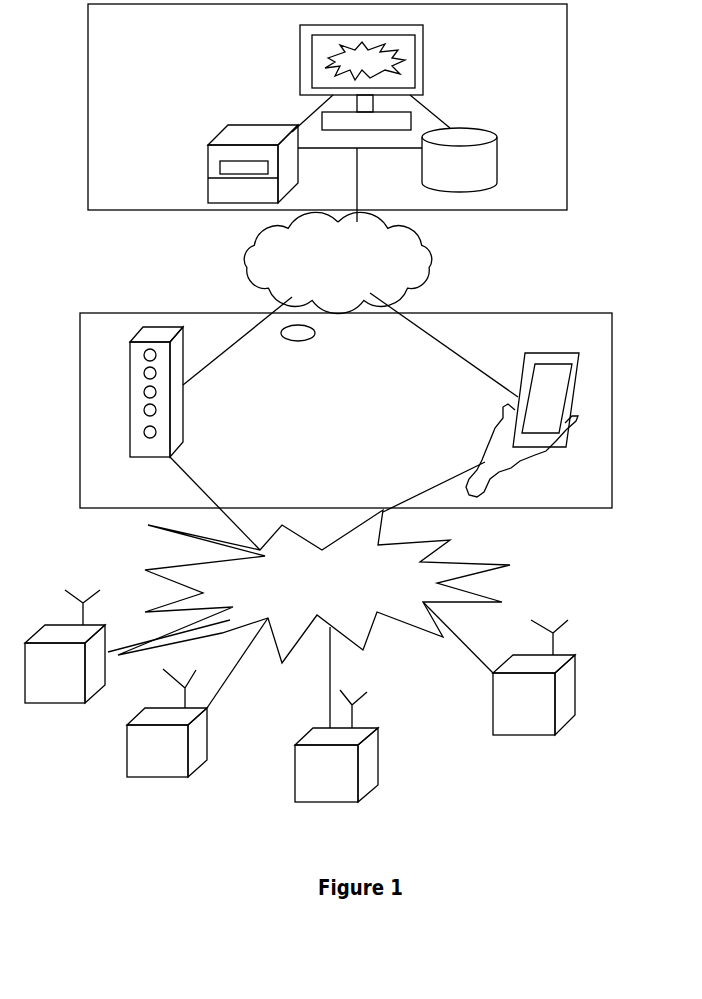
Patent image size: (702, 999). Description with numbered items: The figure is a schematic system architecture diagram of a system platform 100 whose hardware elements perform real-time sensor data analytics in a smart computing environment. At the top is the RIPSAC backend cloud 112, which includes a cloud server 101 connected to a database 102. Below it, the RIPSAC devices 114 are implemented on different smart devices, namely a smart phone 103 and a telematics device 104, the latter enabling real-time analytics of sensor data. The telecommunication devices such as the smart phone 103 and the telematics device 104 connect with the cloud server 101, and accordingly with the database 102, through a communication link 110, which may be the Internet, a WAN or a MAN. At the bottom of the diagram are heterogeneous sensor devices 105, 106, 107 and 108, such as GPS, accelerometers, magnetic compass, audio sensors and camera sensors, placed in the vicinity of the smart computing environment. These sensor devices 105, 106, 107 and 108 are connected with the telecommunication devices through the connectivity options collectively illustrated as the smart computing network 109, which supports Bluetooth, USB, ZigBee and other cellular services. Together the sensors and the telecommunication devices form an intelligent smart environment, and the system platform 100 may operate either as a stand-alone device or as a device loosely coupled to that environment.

The system architecture 100 is at (60, 851).
The cloud server 101 is at (203, 172).
The database 102 is at (478, 128).
The smart phone 103 is at (529, 353).
The telematics device 104 is at (130, 437).
The sensor device 105 is at (38, 703).
The sensor device 106 is at (153, 777).
The sensor device 107 is at (327, 802).
The sensor device 108 is at (493, 715).
The smart computing network 109 is at (510, 565).
The communication link 110 is at (432, 247).
The RIPSAC backend cloud 112 is at (88, 112).
The RIPSAC devices 114 is at (80, 405).